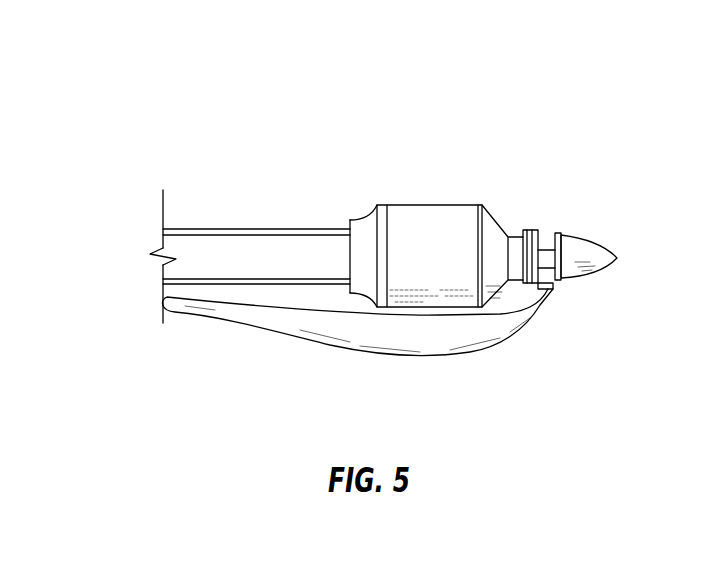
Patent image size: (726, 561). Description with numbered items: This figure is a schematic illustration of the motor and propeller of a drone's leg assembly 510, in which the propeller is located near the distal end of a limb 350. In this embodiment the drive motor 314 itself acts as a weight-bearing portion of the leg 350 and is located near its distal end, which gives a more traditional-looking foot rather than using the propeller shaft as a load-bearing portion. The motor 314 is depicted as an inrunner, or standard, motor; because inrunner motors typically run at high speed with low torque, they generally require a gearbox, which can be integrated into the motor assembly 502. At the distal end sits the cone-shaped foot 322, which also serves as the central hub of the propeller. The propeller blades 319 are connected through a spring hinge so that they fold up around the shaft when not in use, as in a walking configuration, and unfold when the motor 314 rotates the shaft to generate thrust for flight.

The leg assembly 510 is at (555, 72).
The limb 350 is at (350, 195).
The drive motor 314 is at (448, 223).
The motor assembly 502 is at (585, 207).
The foot 322 is at (587, 250).
The propeller blades 319 is at (318, 328).